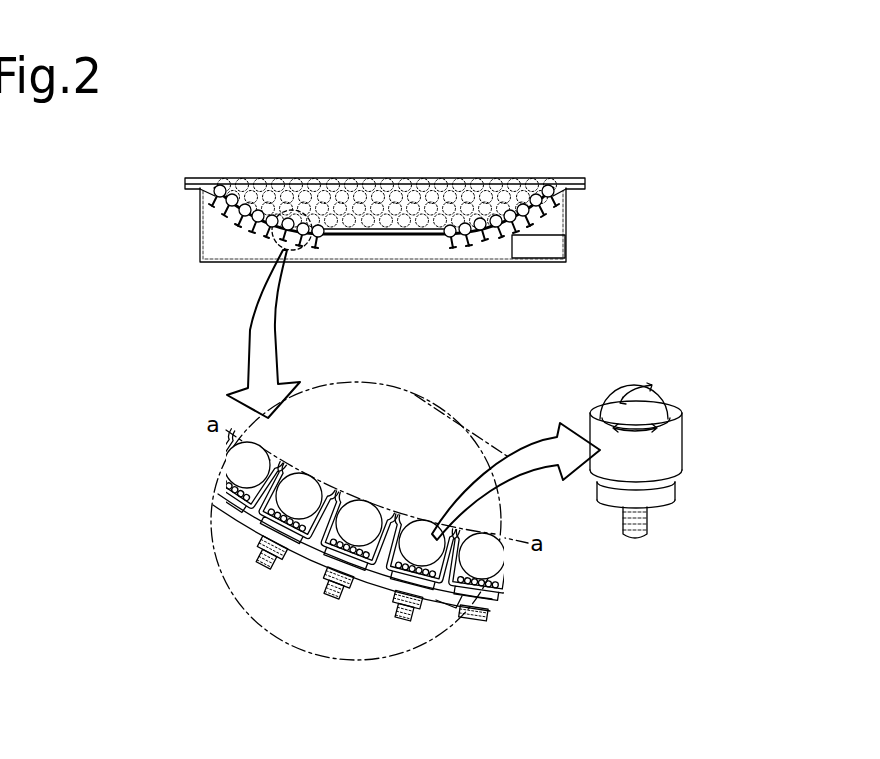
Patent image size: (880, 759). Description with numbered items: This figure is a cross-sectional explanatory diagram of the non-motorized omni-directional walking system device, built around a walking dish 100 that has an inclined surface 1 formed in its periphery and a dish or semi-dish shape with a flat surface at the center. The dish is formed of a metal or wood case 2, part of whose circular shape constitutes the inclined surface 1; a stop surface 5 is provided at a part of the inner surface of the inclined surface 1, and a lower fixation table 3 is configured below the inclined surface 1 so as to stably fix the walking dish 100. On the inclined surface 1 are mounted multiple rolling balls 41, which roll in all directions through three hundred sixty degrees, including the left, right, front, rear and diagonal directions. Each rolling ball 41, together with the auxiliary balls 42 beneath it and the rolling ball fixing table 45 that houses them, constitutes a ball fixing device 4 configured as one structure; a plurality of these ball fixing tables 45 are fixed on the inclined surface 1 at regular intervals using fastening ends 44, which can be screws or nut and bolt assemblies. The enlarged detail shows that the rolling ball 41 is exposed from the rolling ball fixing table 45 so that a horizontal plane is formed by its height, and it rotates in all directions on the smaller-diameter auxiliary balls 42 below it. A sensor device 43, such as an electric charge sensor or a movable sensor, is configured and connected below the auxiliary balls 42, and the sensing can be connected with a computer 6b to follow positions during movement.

The walking dish 100 is at (243, 156).
The inclined surface 1 is at (437, 226).
The case 2 is at (575, 178).
The lower fixation table 3 is at (565, 222).
The ball fixing device 4 is at (322, 240).
The stop surface 5 is at (393, 207).
The computer 6b is at (566, 250).
The rolling ball 41 is at (314, 184).
The auxiliary ball 42 is at (447, 616).
The sensor device 43 is at (234, 527).
The fastening end 44 is at (260, 568).
The rolling ball fixing table 45 is at (340, 497).